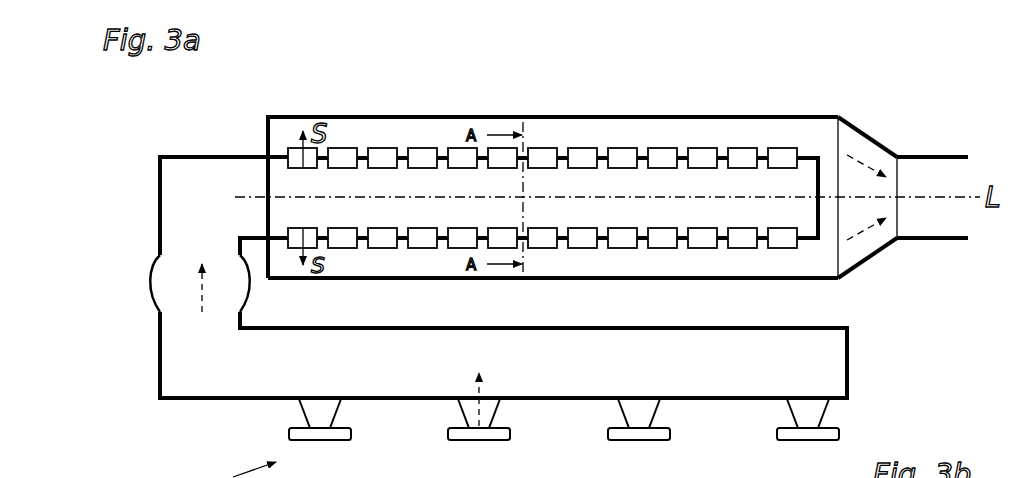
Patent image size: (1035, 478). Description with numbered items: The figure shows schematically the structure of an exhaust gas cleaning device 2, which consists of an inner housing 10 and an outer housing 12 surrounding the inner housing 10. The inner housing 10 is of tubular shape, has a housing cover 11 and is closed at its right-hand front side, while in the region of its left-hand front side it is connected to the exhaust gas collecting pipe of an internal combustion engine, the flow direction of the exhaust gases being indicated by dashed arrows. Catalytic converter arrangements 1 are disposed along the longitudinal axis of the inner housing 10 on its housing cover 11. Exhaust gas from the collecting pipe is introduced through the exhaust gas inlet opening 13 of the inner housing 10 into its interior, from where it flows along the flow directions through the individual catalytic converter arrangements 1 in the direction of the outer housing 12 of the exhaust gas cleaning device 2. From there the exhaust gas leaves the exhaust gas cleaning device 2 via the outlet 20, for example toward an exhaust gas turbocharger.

The catalytic converter arrangements 1 is at (386, 150).
The exhaust gas cleaning device 2 is at (861, 92).
The inner housing 10 is at (820, 177).
The housing cover 11 is at (807, 156).
The outer housing 12 is at (571, 116).
The exhaust gas inlet opening 13 is at (253, 181).
The outlet 20 is at (941, 156).